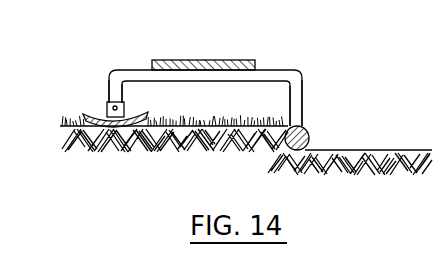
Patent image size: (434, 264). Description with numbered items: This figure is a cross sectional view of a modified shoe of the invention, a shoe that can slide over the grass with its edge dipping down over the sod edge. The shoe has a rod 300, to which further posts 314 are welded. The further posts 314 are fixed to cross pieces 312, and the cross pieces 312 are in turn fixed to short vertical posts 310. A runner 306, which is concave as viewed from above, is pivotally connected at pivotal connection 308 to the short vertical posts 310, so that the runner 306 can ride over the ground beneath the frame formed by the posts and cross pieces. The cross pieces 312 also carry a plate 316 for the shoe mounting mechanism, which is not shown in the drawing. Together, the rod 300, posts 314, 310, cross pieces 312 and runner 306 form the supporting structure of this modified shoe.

The rod 300 is at (309, 133).
The runner 306 is at (84, 116).
The pivotal connection 308 is at (122, 108).
The short vertical posts 310 is at (114, 92).
The cross pieces 312 is at (128, 70).
The further posts 314 is at (304, 98).
The plate 316 is at (233, 61).